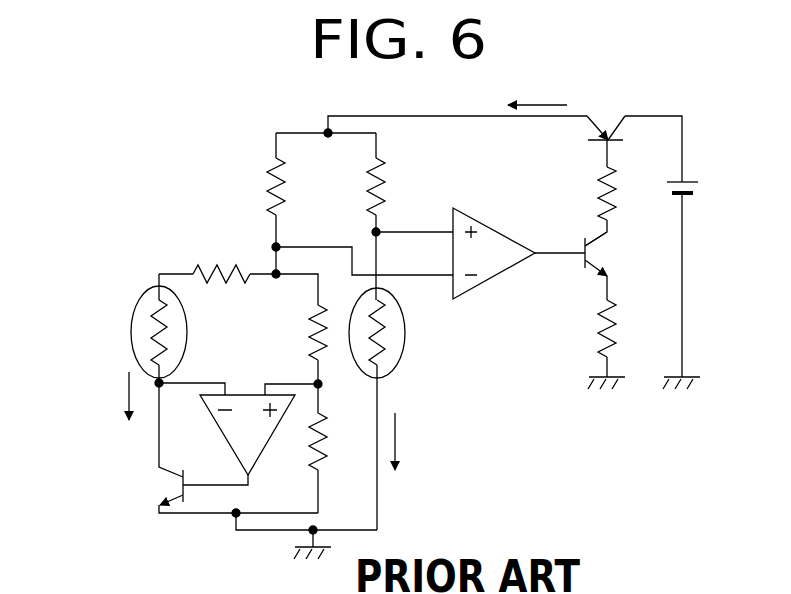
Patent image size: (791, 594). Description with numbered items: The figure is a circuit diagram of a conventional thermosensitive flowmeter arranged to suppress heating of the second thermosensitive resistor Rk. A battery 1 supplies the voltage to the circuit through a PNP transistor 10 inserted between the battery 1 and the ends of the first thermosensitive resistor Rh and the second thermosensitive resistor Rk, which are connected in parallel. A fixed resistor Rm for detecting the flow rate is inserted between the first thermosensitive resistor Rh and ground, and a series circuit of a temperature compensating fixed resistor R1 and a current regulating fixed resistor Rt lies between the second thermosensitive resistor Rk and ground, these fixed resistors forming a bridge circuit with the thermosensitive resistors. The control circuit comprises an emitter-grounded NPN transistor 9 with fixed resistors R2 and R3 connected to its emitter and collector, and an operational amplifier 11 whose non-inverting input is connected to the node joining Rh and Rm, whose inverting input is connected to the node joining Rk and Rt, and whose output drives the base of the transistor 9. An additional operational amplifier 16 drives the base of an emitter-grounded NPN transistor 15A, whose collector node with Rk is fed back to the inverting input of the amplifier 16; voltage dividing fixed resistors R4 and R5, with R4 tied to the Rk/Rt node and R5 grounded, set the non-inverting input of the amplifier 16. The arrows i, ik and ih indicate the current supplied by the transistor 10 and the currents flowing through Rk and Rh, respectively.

The battery 1 is at (695, 181).
The NPN transistor 9 is at (605, 253).
The PNP transistor 10 is at (590, 148).
The operational amplifier 11 is at (506, 268).
The NPN transistor 15A is at (153, 487).
The operational amplifier 16 is at (243, 394).
The current regulating fixed resistor Rt is at (288, 161).
The fixed resistor for detecting the flow rate Rm is at (388, 161).
The temperature compensating fixed resistor R1 is at (217, 262).
The fixed resistor R2 is at (596, 331).
The fixed resistor R3 is at (590, 195).
The fixed resistor R4 is at (306, 313).
The fixed resistor R5 is at (300, 452).
The second thermosensitive resistor Rk is at (129, 331).
The first thermosensitive resistor Rh is at (407, 330).
The current i is at (548, 104).
The current ik through Rk ik is at (127, 397).
The heating current ih is at (398, 437).